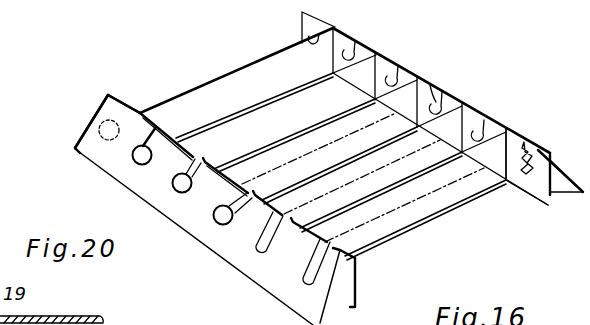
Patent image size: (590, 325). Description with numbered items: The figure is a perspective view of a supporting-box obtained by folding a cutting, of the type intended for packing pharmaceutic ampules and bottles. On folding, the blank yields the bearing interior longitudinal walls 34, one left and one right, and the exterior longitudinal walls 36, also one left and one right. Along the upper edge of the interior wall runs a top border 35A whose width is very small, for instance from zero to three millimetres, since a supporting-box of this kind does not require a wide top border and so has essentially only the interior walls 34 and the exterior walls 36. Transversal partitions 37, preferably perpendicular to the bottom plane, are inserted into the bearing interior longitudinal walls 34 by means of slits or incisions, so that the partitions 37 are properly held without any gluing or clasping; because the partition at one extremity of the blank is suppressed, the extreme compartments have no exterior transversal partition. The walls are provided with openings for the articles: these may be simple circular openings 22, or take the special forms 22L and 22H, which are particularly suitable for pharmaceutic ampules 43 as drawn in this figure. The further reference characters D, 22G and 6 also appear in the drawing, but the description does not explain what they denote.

The top border 35A is at (134, 112).
The circular opening 22 is at (338, 30).
The transversal partition 37 is at (262, 77).
The hook tab D is at (430, 90).
The hook tab 22G is at (444, 100).
The pharmaceutic ampule 43 is at (458, 133).
The opening form 22L is at (488, 143).
The opening form 22H is at (523, 178).
The flange with keyhole slots 6 is at (174, 206).
The exterior longitudinal wall 36 is at (323, 297).
The bearing interior longitudinal wall 34 is at (357, 300).